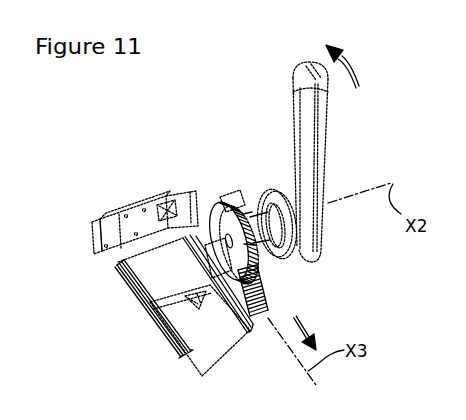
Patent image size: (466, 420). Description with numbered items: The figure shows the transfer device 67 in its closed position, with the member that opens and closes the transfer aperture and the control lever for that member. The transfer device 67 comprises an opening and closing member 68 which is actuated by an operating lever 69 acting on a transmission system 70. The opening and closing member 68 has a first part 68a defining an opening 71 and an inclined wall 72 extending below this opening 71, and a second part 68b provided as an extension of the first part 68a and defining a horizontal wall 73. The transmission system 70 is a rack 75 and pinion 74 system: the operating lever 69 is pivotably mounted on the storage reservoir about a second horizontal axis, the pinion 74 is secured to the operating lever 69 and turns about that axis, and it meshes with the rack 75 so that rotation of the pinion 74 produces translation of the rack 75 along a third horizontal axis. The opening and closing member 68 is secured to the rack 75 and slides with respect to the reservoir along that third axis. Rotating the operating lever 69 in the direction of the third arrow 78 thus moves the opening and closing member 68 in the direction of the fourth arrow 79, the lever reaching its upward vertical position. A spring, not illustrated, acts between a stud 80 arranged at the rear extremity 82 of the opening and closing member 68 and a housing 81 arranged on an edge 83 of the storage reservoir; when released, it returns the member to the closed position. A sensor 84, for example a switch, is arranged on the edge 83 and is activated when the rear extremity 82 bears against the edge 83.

The transfer device 67 is at (396, 64).
The opening and closing member 68 is at (136, 309).
The first part 68a is at (153, 333).
The second part 68b is at (128, 288).
The operating lever 69 is at (330, 139).
The transmission system 70 is at (271, 275).
The opening 71 is at (172, 307).
The inclined wall 72 is at (203, 355).
The horizontal wall 73 is at (153, 275).
The pinion 74 is at (232, 206).
The rack 75 is at (265, 300).
The third arrow 78 is at (348, 57).
The fourth arrow 79 is at (305, 328).
The stud 80 is at (207, 196).
The housing 81 is at (165, 222).
The rear extremity 82 is at (154, 263).
The edge 83 is at (97, 217).
The sensor 84 is at (134, 215).